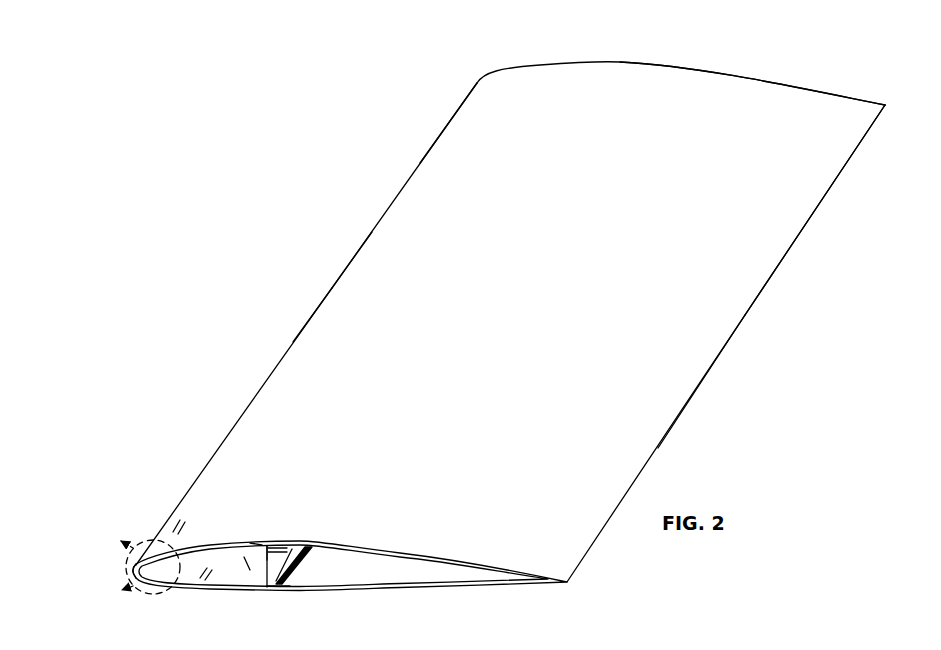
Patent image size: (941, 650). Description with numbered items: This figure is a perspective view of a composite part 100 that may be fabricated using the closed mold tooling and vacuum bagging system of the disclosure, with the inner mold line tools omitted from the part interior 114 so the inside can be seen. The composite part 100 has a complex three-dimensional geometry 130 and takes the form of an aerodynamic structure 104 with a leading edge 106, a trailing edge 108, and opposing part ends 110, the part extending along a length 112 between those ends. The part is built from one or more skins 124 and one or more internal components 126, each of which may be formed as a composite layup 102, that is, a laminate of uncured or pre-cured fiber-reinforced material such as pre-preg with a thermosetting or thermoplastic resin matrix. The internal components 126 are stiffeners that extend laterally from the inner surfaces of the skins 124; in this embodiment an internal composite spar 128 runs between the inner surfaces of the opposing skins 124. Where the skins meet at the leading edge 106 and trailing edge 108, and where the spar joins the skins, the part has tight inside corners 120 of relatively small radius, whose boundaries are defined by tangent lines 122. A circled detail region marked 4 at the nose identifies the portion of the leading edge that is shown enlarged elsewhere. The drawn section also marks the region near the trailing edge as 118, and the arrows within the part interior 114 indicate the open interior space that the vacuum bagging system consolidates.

The composite part 100 is at (333, 288).
The composite layup 102 is at (373, 238).
The aerodynamic structure 104 is at (293, 342).
The leading edge 106 is at (250, 402).
The trailing edge 108 is at (658, 448).
The part ends 110 is at (813, 88).
The length 112 is at (745, 318).
The part interior 114 is at (186, 571).
The lower skin 118 is at (207, 580).
The inside corners 120 is at (300, 553).
The tangent lines 122 is at (142, 592).
The skins 124 is at (172, 522).
The internal components 126 is at (244, 557).
The internal composite spar 128 is at (252, 543).
The three-dimensional geometry 130 is at (267, 545).
The detail view indicator FIG. 4 is at (140, 567).